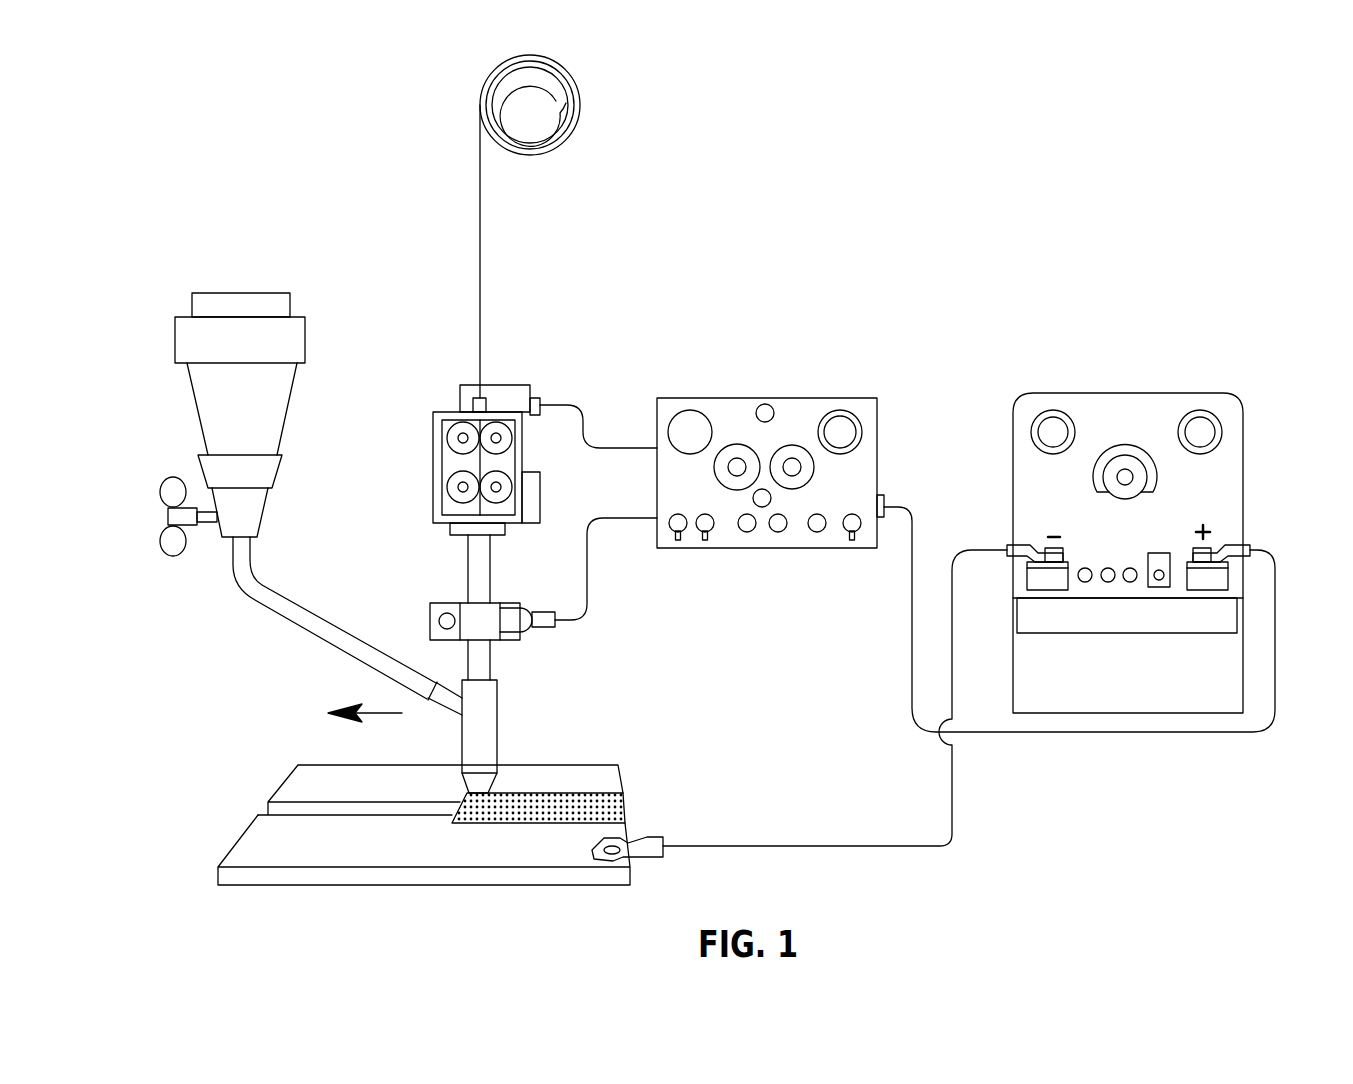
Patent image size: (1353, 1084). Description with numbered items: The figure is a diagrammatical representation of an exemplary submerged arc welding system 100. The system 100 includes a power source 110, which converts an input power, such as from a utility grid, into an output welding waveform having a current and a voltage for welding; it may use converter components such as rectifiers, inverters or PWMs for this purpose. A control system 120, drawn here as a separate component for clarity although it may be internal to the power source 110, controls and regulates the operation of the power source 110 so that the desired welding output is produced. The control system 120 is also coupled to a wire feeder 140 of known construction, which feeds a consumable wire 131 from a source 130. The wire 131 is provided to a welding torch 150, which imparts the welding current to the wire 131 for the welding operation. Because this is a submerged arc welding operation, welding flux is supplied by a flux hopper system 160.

The submerged arc welding system 100 is at (1064, 164).
The power source 110 is at (1165, 392).
The control system 120 is at (788, 398).
The source 130 is at (567, 70).
The wire 131 is at (480, 247).
The wire feeder 140 is at (433, 436).
The welding torch 150 is at (497, 720).
The flux hopper system 160 is at (201, 428).